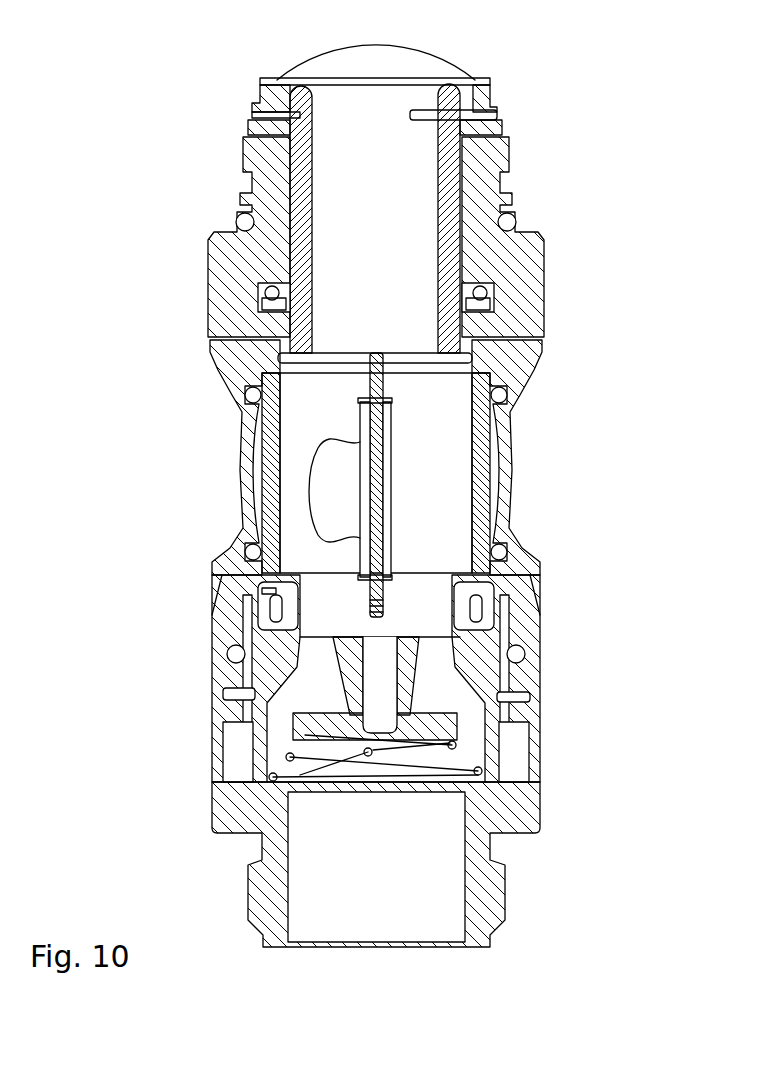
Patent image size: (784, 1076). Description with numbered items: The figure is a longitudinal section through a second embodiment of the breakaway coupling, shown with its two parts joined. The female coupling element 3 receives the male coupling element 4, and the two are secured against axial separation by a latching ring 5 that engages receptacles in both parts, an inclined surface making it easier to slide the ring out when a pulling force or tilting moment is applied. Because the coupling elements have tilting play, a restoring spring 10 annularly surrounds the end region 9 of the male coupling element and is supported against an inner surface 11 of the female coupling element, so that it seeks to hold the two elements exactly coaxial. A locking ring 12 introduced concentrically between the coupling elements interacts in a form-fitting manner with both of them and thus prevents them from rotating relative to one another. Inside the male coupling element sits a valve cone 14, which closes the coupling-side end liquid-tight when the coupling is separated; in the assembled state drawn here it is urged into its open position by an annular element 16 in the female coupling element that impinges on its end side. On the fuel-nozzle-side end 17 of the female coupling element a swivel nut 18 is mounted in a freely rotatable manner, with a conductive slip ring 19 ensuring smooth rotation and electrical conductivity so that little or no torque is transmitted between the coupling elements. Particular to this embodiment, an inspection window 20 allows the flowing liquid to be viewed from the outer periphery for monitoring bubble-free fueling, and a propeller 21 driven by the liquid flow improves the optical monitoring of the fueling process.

The fuel-nozzle-side end 17 is at (293, 105).
The swivel nut 18 is at (230, 247).
The conductive slip ring 19 is at (273, 300).
The inspection window 20 is at (243, 462).
The propeller 21 is at (333, 503).
The annular element 16 is at (413, 550).
The female coupling element 3 is at (500, 590).
The valve cone 14 is at (400, 677).
The latching ring 5 is at (503, 698).
The end region 9 is at (290, 597).
The restoring spring 10 is at (260, 623).
The inner surface 11 is at (240, 642).
The locking ring 12 is at (247, 747).
The male coupling element 4 is at (270, 830).